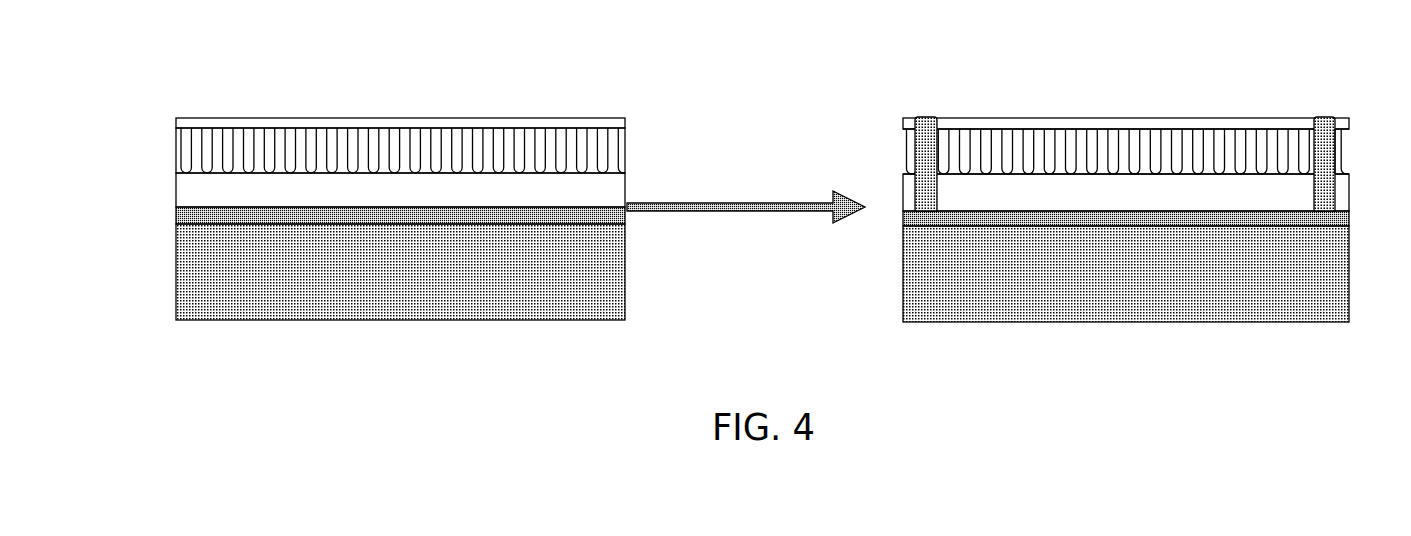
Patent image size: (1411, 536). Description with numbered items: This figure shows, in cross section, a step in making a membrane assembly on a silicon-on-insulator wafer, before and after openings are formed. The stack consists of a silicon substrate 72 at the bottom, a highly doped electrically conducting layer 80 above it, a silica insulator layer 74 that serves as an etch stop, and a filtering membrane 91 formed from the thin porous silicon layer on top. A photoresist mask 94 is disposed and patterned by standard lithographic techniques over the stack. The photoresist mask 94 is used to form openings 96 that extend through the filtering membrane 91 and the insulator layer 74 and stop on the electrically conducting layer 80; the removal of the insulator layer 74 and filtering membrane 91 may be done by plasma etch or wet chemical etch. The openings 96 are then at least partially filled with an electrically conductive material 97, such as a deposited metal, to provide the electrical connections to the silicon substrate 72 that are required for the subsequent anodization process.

The silicon substrate 72 is at (176, 272).
The electrically conducting layer 80 is at (176, 218).
The silica insulator layer 74 is at (180, 196).
The filtering membrane 91 is at (176, 146).
The photoresist mask 94 is at (295, 118).
The openings 96 is at (925, 116).
The electrically conductive material 97 is at (1335, 150).